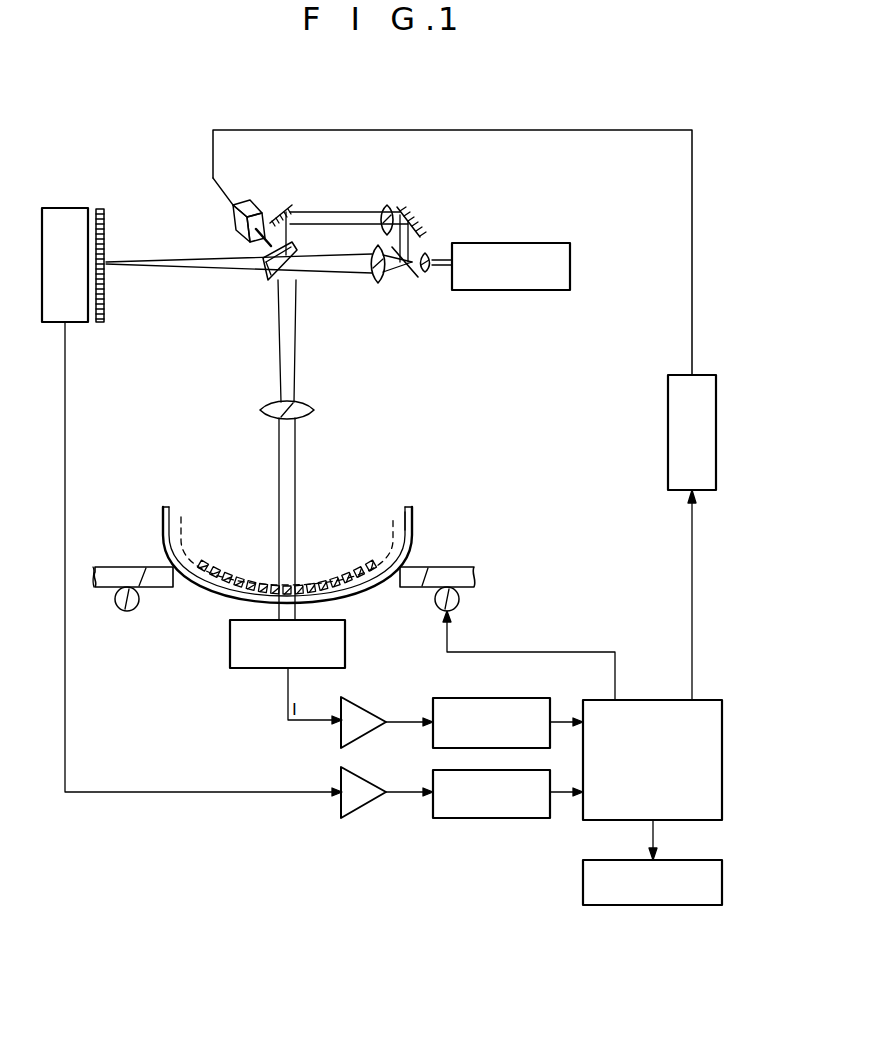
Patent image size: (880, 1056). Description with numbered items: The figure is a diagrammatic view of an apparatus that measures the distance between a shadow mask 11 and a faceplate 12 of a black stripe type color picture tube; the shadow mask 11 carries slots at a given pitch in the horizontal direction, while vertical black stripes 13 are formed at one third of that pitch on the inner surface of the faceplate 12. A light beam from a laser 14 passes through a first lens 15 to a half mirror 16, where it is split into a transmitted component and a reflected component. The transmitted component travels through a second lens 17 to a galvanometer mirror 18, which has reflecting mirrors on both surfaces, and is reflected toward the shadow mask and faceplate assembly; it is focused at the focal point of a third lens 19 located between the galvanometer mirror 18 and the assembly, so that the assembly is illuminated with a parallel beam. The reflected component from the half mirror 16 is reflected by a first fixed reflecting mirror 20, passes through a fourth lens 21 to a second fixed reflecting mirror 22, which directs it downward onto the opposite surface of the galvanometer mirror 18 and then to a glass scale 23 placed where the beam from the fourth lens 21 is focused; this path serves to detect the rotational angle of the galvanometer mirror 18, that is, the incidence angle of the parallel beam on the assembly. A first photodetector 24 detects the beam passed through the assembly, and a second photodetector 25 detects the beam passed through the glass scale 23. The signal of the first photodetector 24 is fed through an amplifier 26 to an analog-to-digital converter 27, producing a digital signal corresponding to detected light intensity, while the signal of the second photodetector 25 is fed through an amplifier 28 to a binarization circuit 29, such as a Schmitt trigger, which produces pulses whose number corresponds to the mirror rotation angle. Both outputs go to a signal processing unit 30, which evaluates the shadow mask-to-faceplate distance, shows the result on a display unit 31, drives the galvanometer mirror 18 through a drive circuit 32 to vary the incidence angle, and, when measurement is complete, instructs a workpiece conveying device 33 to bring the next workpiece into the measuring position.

The shadow mask 11 is at (404, 512).
The faceplate 12 is at (413, 515).
The vertical black stripes 13 is at (202, 560).
The laser 14 is at (570, 266).
The first lens 15 is at (428, 275).
The half mirror 16 is at (416, 281).
The second lens 17 is at (378, 286).
The galvanometer mirror 18 is at (266, 283).
The third lens 19 is at (316, 410).
The first fixed reflecting mirror 20 is at (423, 212).
The fourth lens 21 is at (387, 205).
The second fixed reflecting mirror 22 is at (285, 203).
The glass scale 23 is at (106, 310).
The first photodetector 24 is at (345, 650).
The second photodetector 25 is at (65, 208).
The amplifier 26 is at (366, 703).
The analog-to-digital (A/D) converter 27 is at (495, 698).
The amplifier 28 is at (370, 802).
The binarization circuit 29 is at (497, 818).
The signal processing unit 30 is at (655, 700).
The display unit 31 is at (655, 905).
The drive circuit 32 is at (668, 430).
The workpiece conveying device 33 is at (462, 566).